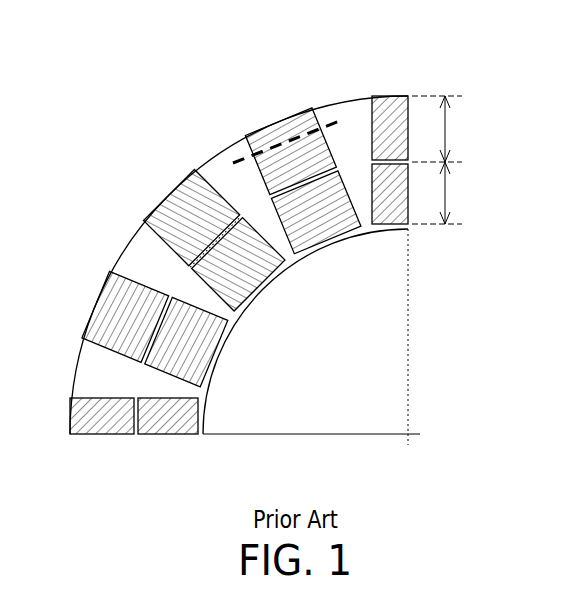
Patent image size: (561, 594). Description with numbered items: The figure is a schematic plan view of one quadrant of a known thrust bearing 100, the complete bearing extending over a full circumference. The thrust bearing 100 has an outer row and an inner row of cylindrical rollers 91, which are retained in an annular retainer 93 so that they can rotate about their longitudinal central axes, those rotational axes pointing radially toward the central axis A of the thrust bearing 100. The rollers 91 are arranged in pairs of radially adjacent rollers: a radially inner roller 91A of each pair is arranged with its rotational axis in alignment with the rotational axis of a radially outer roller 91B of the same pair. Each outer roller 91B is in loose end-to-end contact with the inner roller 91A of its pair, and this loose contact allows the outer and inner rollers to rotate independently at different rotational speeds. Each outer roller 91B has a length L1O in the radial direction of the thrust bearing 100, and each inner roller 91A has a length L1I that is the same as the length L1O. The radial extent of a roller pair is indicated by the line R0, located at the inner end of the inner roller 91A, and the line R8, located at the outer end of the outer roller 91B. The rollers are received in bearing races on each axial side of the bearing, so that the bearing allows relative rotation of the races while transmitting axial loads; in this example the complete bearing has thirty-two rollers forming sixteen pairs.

The thrust bearing 100 is at (243, 86).
The cylindrical rollers 91 is at (155, 178).
The radially inner roller 91A is at (242, 262).
The radially outer roller 91B is at (198, 197).
The annular retainer 93 is at (143, 248).
The line R8 is at (353, 95).
The line R0 is at (233, 315).
The length of outer roller L1O is at (462, 129).
The length of inner roller L1I is at (459, 193).
The central axis A is at (417, 443).